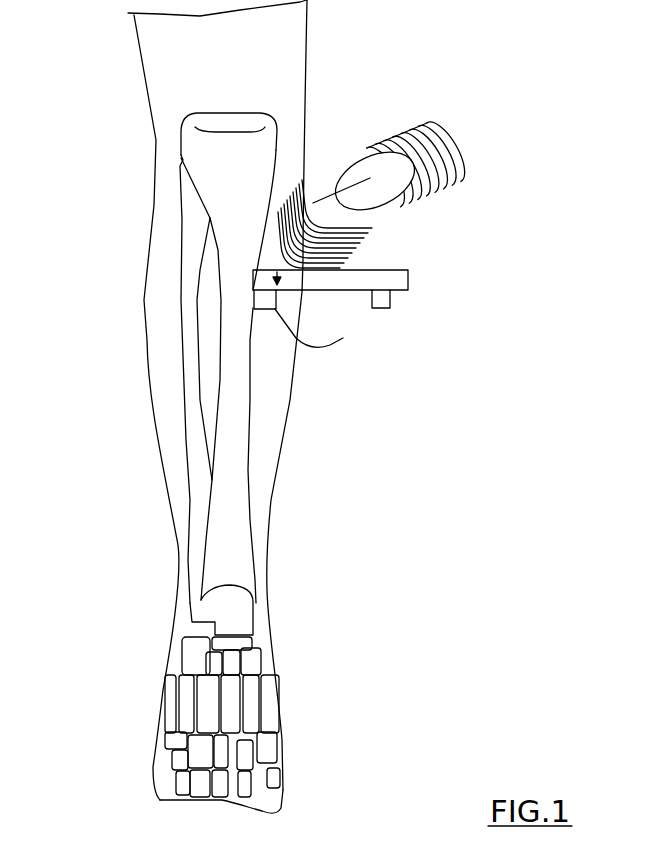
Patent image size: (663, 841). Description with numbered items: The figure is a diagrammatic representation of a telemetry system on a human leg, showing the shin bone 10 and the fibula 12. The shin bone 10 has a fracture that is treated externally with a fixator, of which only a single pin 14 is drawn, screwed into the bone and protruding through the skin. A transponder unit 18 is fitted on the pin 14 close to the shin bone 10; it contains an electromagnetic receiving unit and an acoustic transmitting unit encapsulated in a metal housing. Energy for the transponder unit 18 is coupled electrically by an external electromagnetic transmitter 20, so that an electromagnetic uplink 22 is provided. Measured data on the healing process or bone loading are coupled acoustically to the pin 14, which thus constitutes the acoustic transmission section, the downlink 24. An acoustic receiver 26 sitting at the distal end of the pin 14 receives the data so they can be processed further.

The shin bone 10 is at (233, 515).
The fibula 12 is at (185, 342).
The pin 14 is at (404, 283).
The transponder unit 18 is at (259, 311).
The electromagnetic transmitter 20 is at (440, 118).
The electromagnetic uplink 22 is at (322, 193).
The downlink 24 is at (372, 310).
The acoustic receiver 26 is at (391, 308).